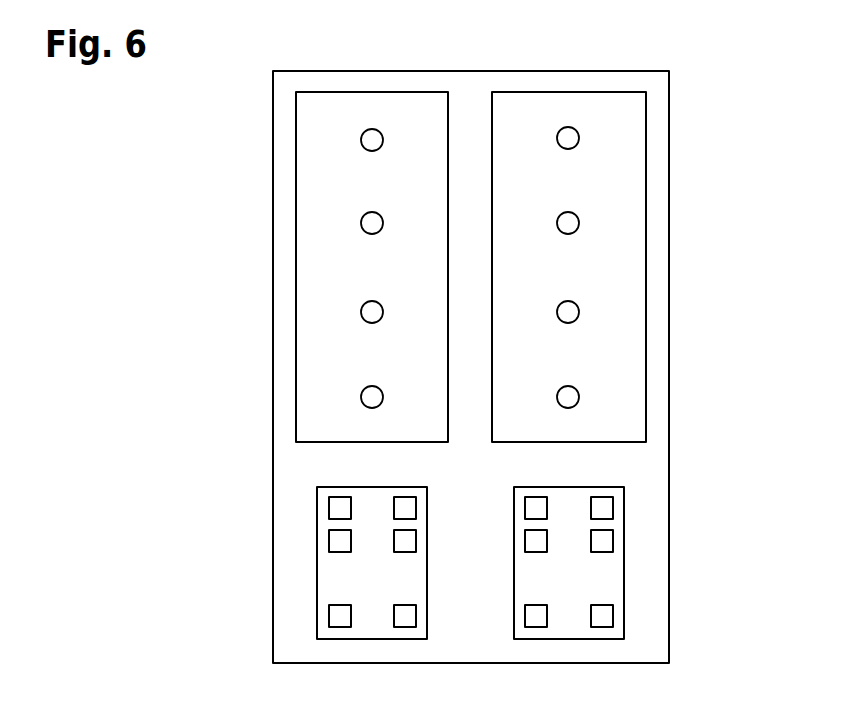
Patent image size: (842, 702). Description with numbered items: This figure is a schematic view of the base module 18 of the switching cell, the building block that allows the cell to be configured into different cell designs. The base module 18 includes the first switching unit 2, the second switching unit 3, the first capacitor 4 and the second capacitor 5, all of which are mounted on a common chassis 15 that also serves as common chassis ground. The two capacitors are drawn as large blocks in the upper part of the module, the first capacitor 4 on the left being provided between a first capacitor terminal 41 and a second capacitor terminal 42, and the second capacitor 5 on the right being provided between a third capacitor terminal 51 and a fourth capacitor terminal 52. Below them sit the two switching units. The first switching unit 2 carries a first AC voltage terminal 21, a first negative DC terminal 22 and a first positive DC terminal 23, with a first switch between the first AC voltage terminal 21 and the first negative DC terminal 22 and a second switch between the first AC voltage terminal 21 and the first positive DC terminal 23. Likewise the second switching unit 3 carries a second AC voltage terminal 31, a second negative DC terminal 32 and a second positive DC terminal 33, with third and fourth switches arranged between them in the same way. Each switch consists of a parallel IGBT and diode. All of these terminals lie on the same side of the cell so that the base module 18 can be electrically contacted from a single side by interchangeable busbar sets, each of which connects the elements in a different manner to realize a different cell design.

The base module 18 is at (178, 110).
The chassis 15 is at (283, 270).
The first capacitor 4 is at (296, 95).
The second capacitor 5 is at (646, 98).
The first capacitor terminal 41 is at (372, 140).
The second capacitor terminal 42 is at (372, 223).
The third capacitor terminal 51 is at (568, 138).
The fourth capacitor terminal 52 is at (568, 223).
The first switching unit 2 is at (317, 574).
The second switching unit 3 is at (624, 574).
The first AC voltage terminal 21 is at (407, 620).
The first negative DC terminal 22 is at (407, 540).
The first positive DC terminal 23 is at (407, 500).
The second AC voltage terminal 31 is at (536, 620).
The second negative DC terminal 32 is at (536, 540).
The second positive DC terminal 33 is at (536, 500).